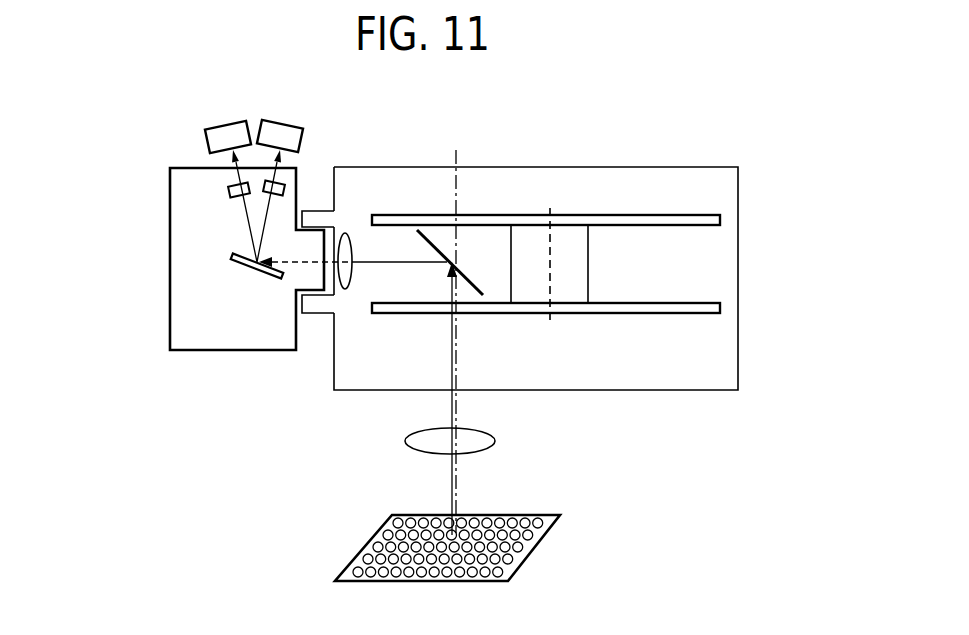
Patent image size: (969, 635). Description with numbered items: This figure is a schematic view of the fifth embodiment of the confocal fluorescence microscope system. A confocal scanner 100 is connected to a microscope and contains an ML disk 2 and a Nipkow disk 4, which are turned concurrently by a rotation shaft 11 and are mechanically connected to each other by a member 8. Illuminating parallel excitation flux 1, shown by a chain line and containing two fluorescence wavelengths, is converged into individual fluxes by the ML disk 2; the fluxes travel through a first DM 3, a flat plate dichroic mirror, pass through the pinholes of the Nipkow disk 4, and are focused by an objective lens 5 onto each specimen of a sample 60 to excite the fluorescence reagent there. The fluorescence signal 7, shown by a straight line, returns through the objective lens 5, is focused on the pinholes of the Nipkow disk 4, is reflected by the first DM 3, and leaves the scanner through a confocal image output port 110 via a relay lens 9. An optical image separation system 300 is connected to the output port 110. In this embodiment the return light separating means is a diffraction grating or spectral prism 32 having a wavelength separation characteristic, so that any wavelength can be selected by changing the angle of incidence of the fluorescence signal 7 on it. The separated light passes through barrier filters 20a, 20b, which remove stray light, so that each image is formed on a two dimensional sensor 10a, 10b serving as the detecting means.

The parallel excitation flux 1 is at (460, 182).
The ML disk 2 is at (693, 217).
The first DM 3 is at (443, 238).
The Nipkow disk 4 is at (693, 308).
The objective lens 5 is at (495, 441).
The fluorescence signal 7 is at (365, 265).
The member 8 is at (573, 240).
The relay lens 9 is at (347, 236).
The two dimensional sensor 10a is at (218, 125).
The two dimensional sensor 10b is at (281, 125).
The rotation shaft 11 is at (550, 320).
The barrier filter 20a is at (229, 189).
The barrier filter 20b is at (263, 192).
The diffraction grating or spectral prism 32 is at (258, 268).
The sample 60 is at (543, 538).
The confocal scanner 100 is at (738, 245).
The confocal image output port 110 is at (311, 305).
The optical image separation system 300 is at (169, 293).